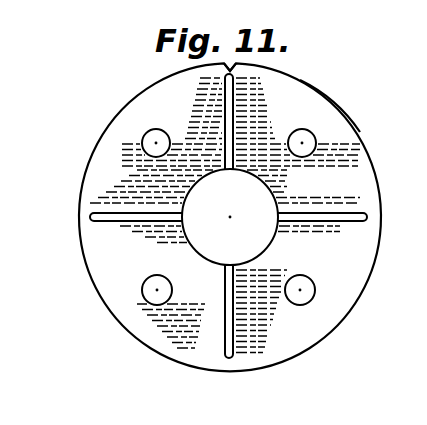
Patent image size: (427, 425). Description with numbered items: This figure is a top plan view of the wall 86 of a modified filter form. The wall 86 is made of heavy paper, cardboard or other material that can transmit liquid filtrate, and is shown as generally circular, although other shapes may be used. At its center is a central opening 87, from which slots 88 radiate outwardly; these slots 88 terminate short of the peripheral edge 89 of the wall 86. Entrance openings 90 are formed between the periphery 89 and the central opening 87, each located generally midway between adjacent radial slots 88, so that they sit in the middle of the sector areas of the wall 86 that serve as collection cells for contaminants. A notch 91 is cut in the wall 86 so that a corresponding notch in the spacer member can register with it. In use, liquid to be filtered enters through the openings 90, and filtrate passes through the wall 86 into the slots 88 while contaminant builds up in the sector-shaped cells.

The wall 86 is at (74, 188).
The central opening 87 is at (270, 197).
The slots 88 is at (318, 222).
The peripheral edge 89 is at (338, 116).
The entrance openings 90 is at (149, 279).
The notch 91 is at (230, 69).